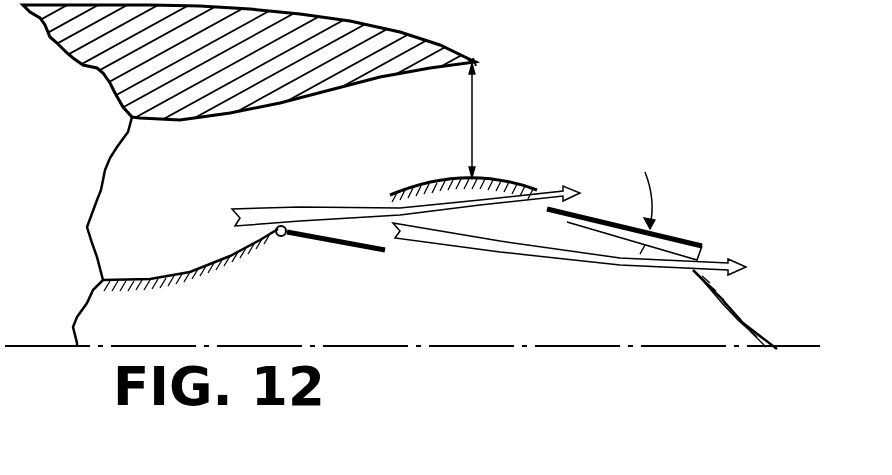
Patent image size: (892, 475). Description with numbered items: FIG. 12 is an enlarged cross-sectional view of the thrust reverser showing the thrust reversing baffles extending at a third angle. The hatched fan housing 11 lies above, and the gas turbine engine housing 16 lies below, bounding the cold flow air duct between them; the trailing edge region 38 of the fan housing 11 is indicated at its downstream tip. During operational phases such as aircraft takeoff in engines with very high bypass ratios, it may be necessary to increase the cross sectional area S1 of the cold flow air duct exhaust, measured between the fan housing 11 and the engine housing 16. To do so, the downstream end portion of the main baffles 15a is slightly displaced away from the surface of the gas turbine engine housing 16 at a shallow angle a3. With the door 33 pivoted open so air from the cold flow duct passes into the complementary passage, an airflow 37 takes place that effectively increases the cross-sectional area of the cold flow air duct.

The fan housing 11 is at (323, 47).
The wing trailing edge 38 is at (478, 58).
The cross sectional area of the cold flow air duct exhaust S1 is at (493, 120).
The gas turbine engine housing 16 is at (413, 185).
The main baffles 15a is at (587, 212).
The shallow angle a3 is at (662, 213).
The door 33 is at (332, 242).
The airflow 37 is at (455, 210).